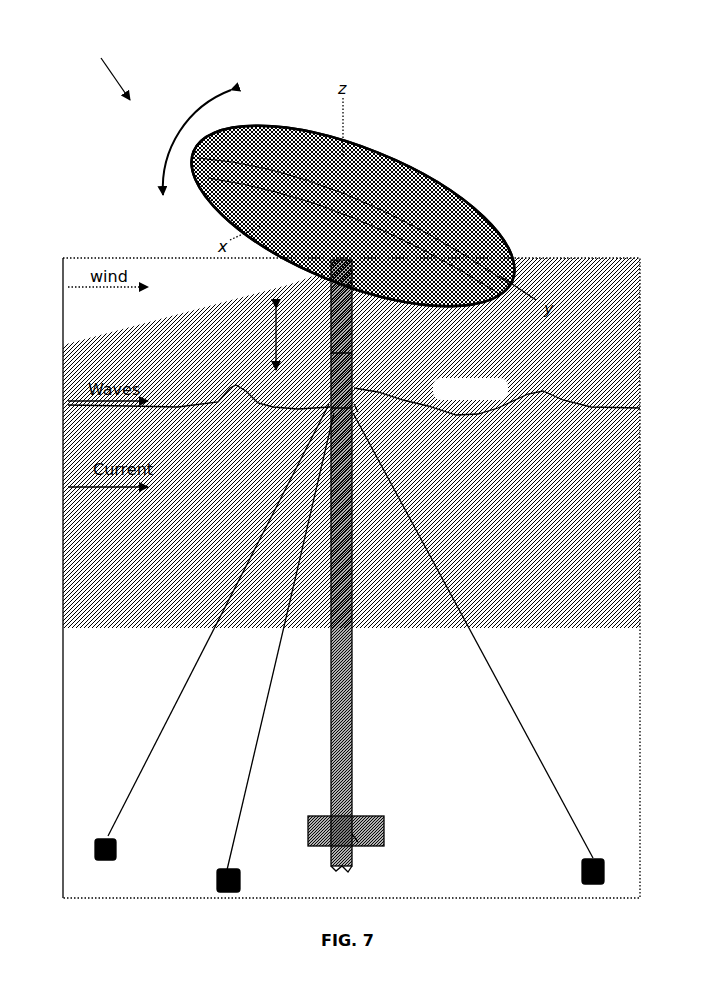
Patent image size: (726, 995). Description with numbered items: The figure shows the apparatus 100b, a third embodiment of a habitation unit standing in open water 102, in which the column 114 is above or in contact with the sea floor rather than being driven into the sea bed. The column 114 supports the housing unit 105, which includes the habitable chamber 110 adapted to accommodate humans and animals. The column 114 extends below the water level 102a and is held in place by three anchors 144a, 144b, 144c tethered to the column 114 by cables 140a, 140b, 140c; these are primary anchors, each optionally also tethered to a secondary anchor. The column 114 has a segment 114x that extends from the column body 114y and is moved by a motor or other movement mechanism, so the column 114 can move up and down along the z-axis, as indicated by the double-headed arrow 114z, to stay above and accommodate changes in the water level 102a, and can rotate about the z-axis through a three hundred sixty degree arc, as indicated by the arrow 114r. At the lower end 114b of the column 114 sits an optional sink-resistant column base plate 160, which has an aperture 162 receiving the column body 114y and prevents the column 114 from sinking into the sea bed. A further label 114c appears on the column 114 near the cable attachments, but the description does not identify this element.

The apparatus 100b is at (104, 65).
The arrow 114r is at (193, 80).
The housing unit 105 is at (415, 146).
The habitable chamber 110 is at (480, 193).
The segment 114x is at (344, 320).
The double headed arrow 114z is at (265, 333).
The water level 102a is at (583, 398).
The open water 102 is at (351, 578).
The mooring connection point on spar 114c is at (334, 437).
The column 114 is at (352, 482).
The body 114y is at (334, 592).
The cable 140a is at (262, 693).
The cable 140b is at (508, 708).
The cable 140c is at (196, 640).
The anchor 144a is at (209, 863).
The anchor 144b is at (597, 862).
The anchor 144c is at (97, 829).
The second end 114b is at (345, 772).
The column base plate 160 is at (378, 814).
The aperture 162 is at (348, 830).